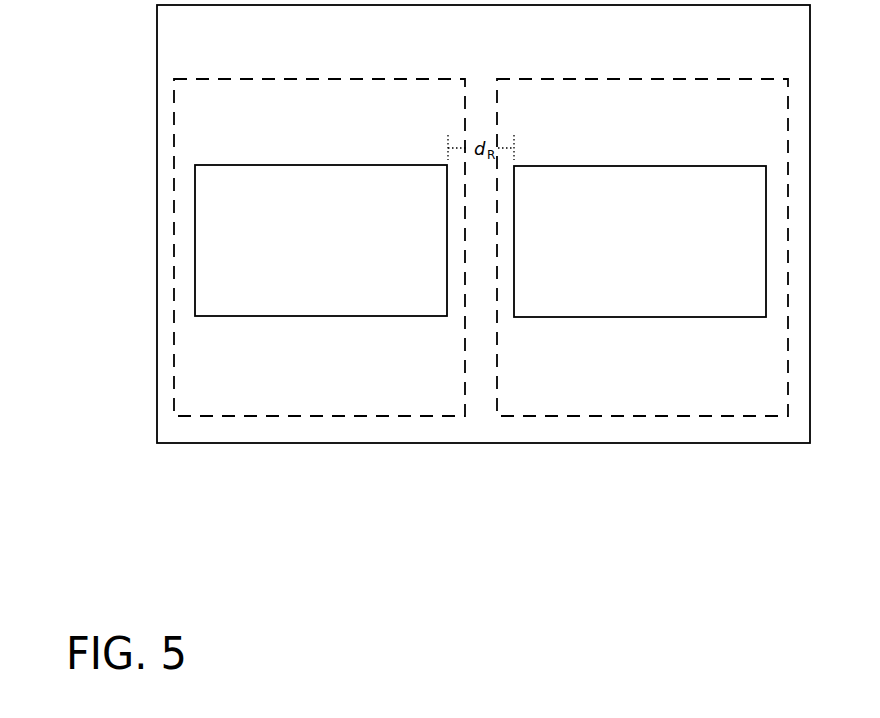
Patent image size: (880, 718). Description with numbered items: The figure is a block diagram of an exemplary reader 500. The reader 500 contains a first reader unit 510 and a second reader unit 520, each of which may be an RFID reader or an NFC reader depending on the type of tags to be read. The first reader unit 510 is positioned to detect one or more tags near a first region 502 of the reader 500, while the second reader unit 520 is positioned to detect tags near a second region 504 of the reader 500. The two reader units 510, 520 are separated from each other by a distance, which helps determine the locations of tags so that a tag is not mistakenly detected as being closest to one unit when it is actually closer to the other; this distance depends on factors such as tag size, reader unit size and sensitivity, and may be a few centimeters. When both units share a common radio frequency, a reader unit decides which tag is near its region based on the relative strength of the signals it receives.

The reader 500 is at (157, 55).
The first region 502 is at (337, 416).
The second region 504 is at (653, 416).
The first reader unit 510 is at (345, 316).
The second reader unit 520 is at (663, 317).